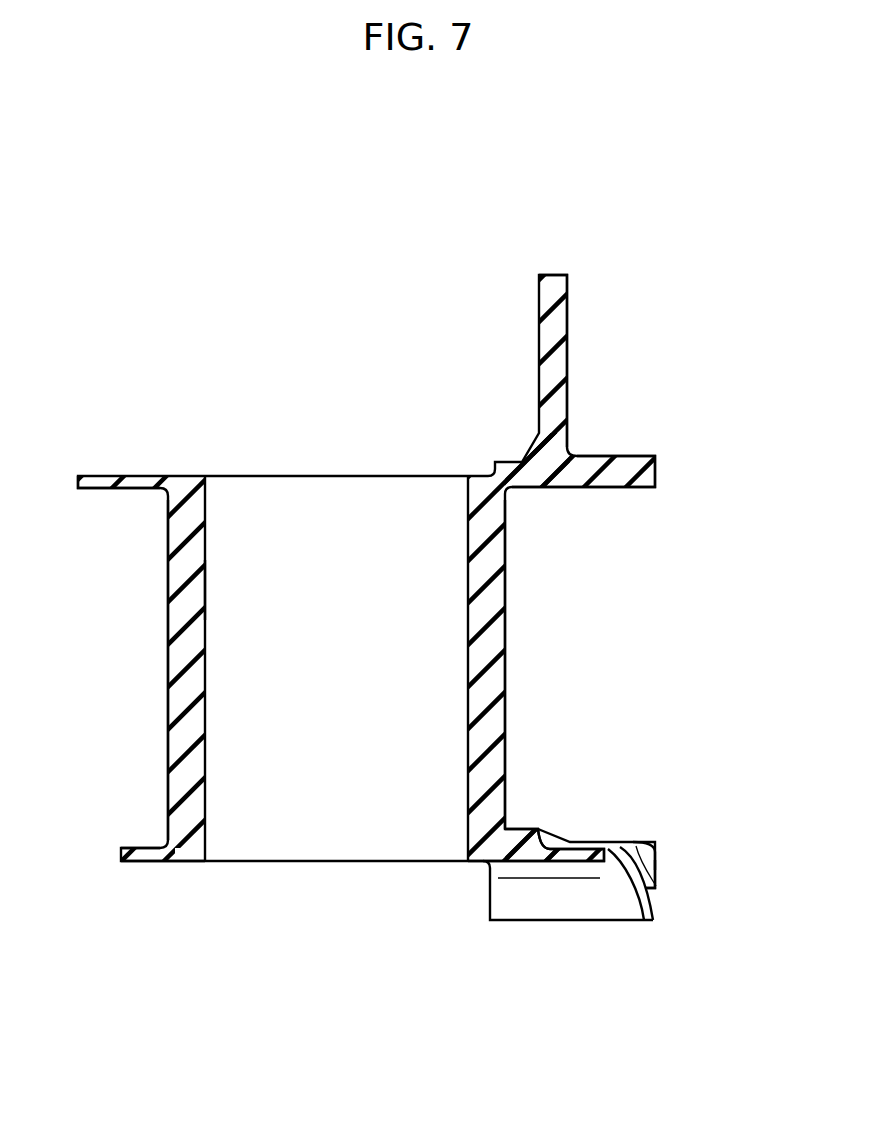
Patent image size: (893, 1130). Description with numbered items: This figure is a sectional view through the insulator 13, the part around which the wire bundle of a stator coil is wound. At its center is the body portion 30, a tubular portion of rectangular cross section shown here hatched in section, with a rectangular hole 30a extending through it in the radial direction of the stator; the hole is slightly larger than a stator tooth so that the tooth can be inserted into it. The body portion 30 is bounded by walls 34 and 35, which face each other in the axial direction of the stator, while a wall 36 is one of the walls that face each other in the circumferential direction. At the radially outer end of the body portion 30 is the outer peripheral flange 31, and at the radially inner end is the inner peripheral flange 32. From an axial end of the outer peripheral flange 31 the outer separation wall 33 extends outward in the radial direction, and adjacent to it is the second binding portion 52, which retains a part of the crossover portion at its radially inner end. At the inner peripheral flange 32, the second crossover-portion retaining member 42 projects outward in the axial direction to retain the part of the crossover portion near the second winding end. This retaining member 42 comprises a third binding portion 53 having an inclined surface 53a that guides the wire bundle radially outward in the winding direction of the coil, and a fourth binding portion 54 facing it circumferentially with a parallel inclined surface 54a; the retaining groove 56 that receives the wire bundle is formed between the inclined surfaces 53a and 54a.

The insulator 13 is at (543, 200).
The body portion 30 is at (515, 598).
The rectangular hole 30a is at (208, 612).
The outer peripheral flange 31 is at (122, 481).
The inner peripheral flange 32 is at (143, 855).
The outer separation wall 33 is at (553, 340).
The wall 34 is at (488, 656).
The wall 35 is at (190, 653).
The wall 36 is at (328, 512).
The second crossover-portion retaining member 42 is at (666, 838).
The second binding portion 52 is at (632, 474).
The third binding portion 53 is at (612, 863).
The inclined surface 53a is at (655, 878).
The fourth binding portion 54 is at (655, 856).
The inclined surface 54a is at (640, 846).
The retaining groove 56 is at (655, 868).